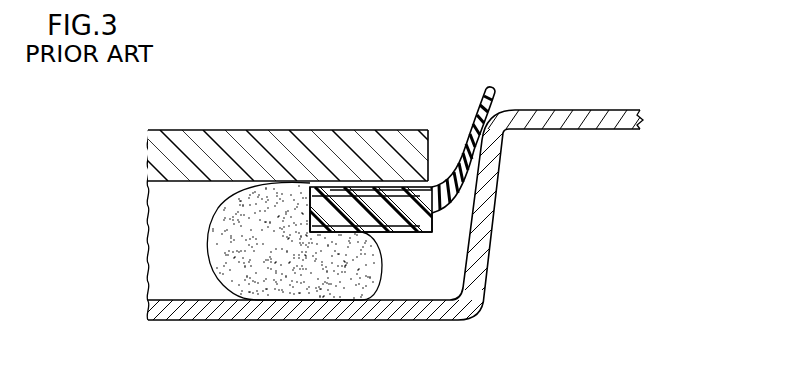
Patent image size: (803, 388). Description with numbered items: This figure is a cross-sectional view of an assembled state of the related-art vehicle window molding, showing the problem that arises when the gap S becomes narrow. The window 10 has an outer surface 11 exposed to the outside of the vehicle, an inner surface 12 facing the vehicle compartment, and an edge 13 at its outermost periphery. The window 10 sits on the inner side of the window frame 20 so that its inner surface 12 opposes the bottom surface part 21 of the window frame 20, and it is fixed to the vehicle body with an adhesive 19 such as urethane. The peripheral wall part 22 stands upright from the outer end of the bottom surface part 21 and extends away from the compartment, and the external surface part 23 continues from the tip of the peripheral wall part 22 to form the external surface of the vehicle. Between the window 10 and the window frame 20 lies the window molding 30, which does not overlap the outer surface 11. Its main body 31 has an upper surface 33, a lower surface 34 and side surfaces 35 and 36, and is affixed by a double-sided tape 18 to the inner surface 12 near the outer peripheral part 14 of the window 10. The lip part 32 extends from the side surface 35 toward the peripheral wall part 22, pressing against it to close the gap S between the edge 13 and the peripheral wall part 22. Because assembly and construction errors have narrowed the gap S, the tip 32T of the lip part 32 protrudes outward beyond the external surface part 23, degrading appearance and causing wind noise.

The window 10 is at (138, 162).
The outer surface 11 is at (163, 129).
The inner surface 12 is at (163, 181).
The edge 13 is at (430, 158).
The outer peripheral part 14 is at (398, 200).
The double-sided tape 18 is at (339, 208).
The adhesive 19 is at (268, 247).
The window frame 20 is at (419, 218).
The bottom surface part 21 is at (367, 317).
The peripheral wall part 22 is at (487, 228).
The external surface part 23 is at (576, 141).
The window molding 30 is at (427, 128).
The main body 31 is at (371, 213).
The lip part 32 is at (500, 133).
The tip of the lip part 32T is at (494, 91).
The upper surface 33 is at (333, 226).
The lower surface 34 is at (357, 233).
The side surface 35 is at (433, 222).
The side surface 36 is at (310, 212).
The gap S is at (445, 148).